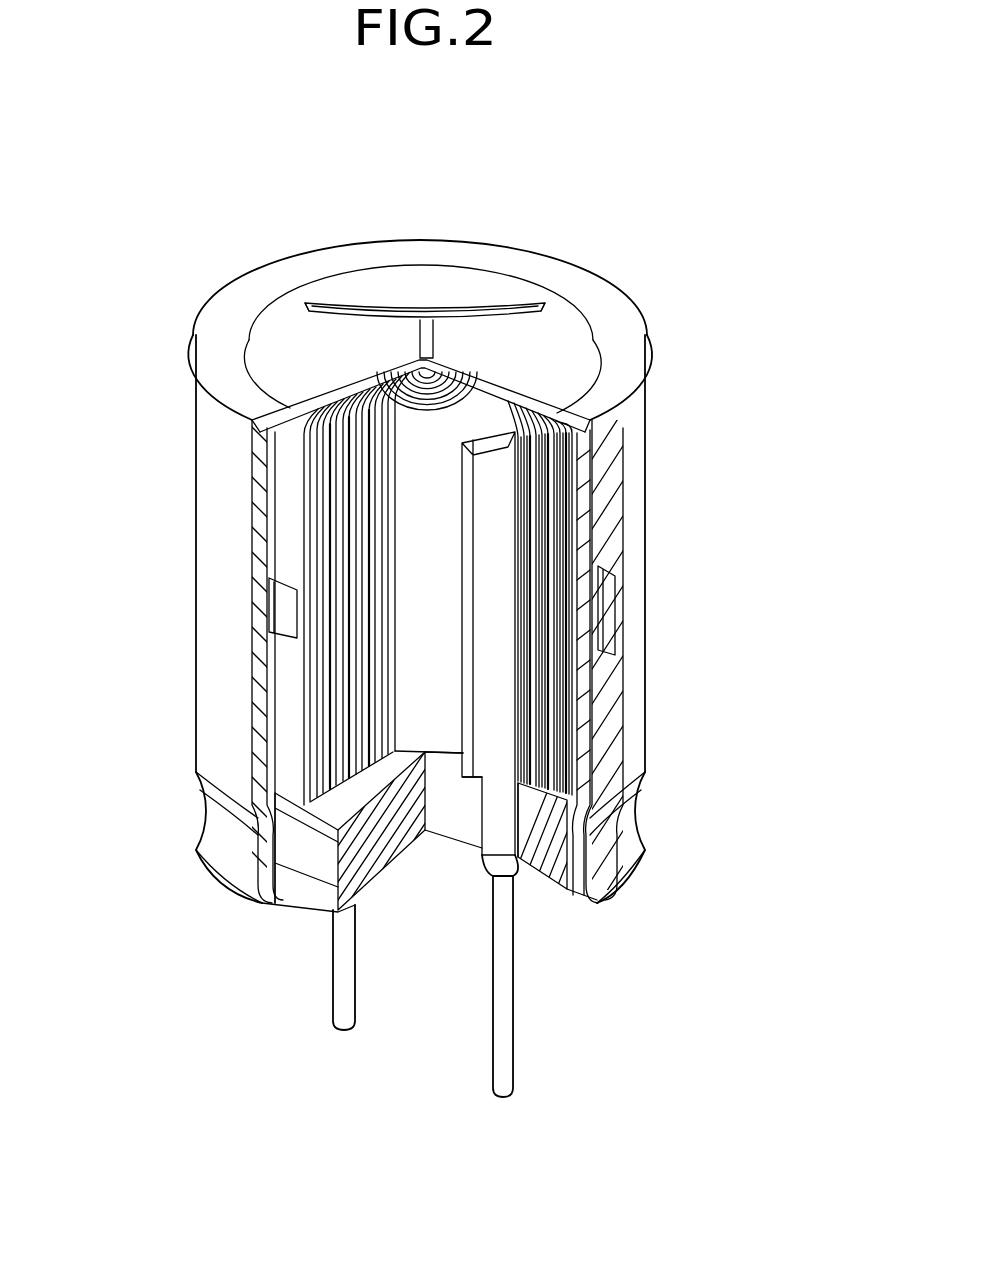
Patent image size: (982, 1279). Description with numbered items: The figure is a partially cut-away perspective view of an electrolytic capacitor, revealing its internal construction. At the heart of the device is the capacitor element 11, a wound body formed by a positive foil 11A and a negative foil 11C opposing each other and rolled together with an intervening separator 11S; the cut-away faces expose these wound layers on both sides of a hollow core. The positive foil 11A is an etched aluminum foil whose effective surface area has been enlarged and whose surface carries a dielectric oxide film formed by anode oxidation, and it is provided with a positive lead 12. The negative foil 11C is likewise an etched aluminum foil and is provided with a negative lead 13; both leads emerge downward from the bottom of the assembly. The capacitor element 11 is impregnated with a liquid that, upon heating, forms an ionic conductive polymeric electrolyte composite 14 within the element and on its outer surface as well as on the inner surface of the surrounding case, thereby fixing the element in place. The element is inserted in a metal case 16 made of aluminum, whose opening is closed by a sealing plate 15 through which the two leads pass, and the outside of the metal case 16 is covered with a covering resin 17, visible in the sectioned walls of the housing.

The capacitor element 11 is at (286, 691).
The positive foil 11A is at (520, 623).
The negative foil 11C is at (490, 493).
The separator 11S is at (533, 720).
The positive lead 12 is at (340, 998).
The negative lead 13 is at (507, 1018).
The electrolyte composite 14 is at (513, 550).
The sealing plate 15 is at (360, 825).
The metal case 16 is at (280, 356).
The covering resin 17 is at (208, 510).